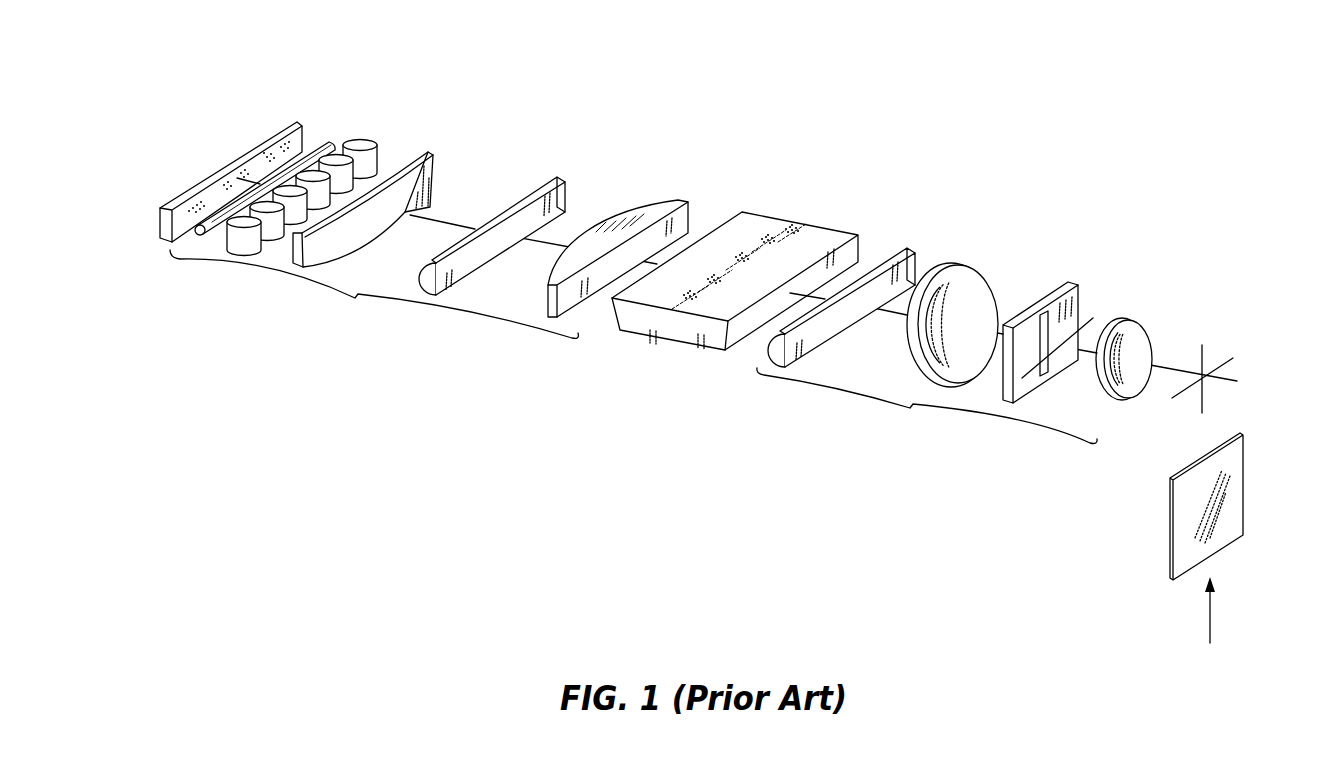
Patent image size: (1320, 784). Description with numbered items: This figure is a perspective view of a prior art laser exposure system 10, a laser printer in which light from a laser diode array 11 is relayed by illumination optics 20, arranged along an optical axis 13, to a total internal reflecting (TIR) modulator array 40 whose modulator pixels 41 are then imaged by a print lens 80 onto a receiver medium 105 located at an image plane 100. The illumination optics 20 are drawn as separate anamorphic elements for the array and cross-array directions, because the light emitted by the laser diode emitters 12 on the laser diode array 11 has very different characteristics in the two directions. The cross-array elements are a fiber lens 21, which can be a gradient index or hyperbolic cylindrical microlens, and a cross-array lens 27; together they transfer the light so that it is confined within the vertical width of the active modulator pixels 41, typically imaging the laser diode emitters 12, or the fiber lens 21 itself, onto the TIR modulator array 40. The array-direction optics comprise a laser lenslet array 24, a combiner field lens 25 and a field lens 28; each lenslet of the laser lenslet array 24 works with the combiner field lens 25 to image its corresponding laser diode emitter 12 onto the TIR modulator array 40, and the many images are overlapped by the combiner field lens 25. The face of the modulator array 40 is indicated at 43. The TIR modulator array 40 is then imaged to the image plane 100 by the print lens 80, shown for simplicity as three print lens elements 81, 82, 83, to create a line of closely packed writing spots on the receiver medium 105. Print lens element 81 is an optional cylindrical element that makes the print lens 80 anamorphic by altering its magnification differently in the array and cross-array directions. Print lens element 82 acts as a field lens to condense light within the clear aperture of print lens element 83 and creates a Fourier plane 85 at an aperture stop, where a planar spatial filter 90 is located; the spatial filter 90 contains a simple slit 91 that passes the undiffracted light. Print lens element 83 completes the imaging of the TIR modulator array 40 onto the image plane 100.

The laser exposure system 10 is at (749, 78).
The laser diode array 11 is at (297, 122).
The laser diode emitters 12 is at (230, 178).
The optical axis 13 is at (443, 221).
The illumination optics 20 is at (374, 294).
The fiber lens 21 is at (334, 140).
The laser lenslet array 24 is at (362, 140).
The combiner field lens 25 is at (428, 150).
The cross-array lens 27 is at (560, 177).
The field lens 28 is at (680, 200).
The TIR modulator array 40 is at (747, 217).
The modulator pixels 41 is at (797, 223).
The plate front face 43 is at (697, 302).
The print lens 80 is at (927, 406).
The print lens element 81 is at (907, 248).
The print lens element 82 is at (966, 263).
The print lens element 83 is at (1134, 319).
The Fourier plane 85 is at (1093, 318).
The spatial filter 90 is at (1027, 310).
The slit 91 is at (1056, 376).
The image plane 100 is at (1205, 347).
The receiver medium 105 is at (1247, 495).